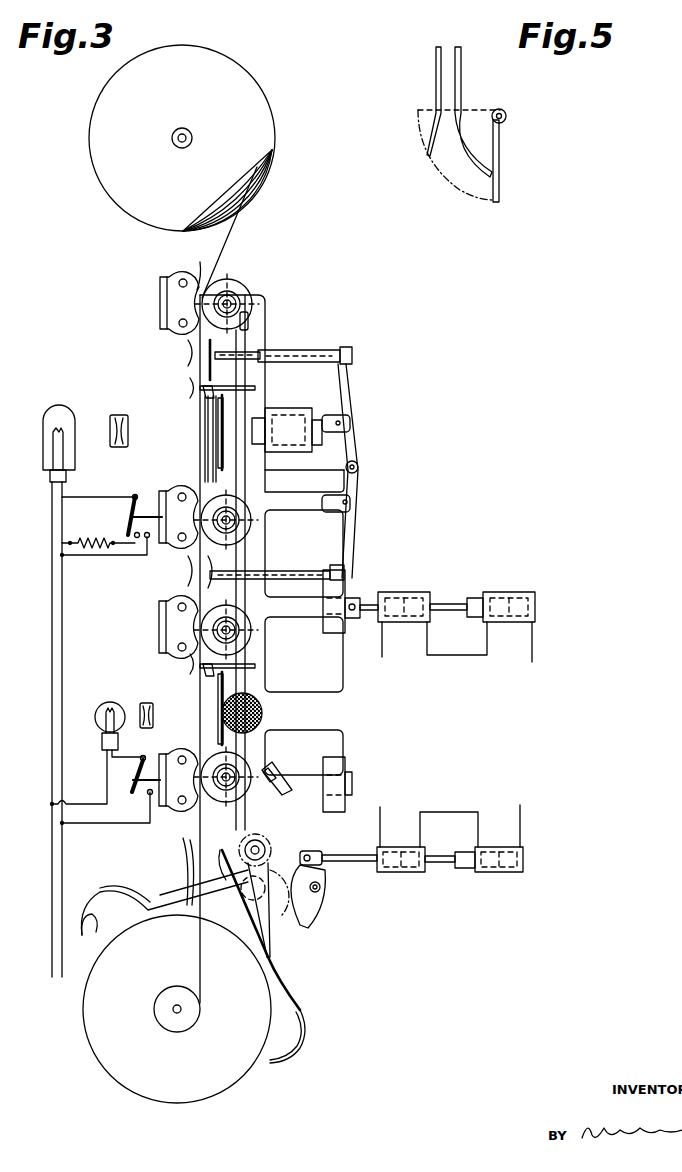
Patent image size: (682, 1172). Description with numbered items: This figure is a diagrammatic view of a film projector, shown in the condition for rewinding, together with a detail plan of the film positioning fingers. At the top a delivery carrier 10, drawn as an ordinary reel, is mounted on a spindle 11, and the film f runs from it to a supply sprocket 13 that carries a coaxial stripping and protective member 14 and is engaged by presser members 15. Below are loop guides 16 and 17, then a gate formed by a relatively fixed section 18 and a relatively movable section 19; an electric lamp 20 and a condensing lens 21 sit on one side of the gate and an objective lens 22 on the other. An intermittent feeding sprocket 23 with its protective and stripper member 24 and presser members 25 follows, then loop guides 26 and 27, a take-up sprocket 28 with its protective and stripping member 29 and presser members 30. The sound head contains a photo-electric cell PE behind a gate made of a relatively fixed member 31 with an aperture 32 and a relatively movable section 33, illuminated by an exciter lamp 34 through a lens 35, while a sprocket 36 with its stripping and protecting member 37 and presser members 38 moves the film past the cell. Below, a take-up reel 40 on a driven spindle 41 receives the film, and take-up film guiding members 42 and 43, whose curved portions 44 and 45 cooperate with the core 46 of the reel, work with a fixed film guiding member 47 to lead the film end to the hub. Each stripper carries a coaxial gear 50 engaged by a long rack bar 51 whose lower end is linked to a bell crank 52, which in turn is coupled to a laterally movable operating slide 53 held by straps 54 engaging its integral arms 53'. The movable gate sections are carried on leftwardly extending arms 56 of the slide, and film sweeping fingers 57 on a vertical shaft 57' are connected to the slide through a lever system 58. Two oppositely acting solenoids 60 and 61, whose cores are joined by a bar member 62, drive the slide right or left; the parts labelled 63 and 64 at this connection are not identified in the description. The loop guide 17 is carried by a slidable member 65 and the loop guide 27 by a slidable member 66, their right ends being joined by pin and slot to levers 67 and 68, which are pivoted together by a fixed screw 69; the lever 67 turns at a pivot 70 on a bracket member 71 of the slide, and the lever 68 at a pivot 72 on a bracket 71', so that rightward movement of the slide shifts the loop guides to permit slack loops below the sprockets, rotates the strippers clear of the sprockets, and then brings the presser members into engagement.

In FIG. 3, the delivery carrier 10 is at (256, 108).
In FIG. 3, the spindle 11 is at (172, 142).
In FIG. 3, the film/tape f is at (242, 218).
In FIG. 3, the supply sprocket 13 is at (242, 286).
In FIG. 3, the stripping and protective member 14 is at (250, 332).
In FIG. 3, the presser members 15 is at (176, 282).
In FIG. 3, the loop guide 16 is at (186, 356).
In FIG. 3, the loop guide 17 is at (214, 346).
In FIG. 3, the relatively fixed gate section 18 is at (212, 448).
In FIG. 5, the relatively fixed gate section 18 is at (466, 84).
In FIG. 3, the relatively movable gate section 19 is at (207, 418).
In FIG. 5, the relatively movable gate section 19 is at (437, 84).
In FIG. 3, the electric lamp 20 is at (50, 470).
In FIG. 3, the condensing lens 21 is at (110, 424).
In FIG. 3, the objective lens 22 is at (280, 452).
In FIG. 3, the intermittent feeding sprocket 23 is at (250, 520).
In FIG. 3, the protective and stripper member 24 is at (247, 532).
In FIG. 3, the presser members 25 is at (188, 490).
In FIG. 3, the loop guide 26 is at (186, 578).
In FIG. 3, the loop guide 27 is at (220, 592).
In FIG. 3, the take-up sprocket 28 is at (251, 650).
In FIG. 3, the protective and stripping member 29 is at (242, 656).
In FIG. 3, the presser members 30 is at (176, 615).
In FIG. 3, the relatively fixed gate member 31 is at (242, 672).
In FIG. 3, the aperture 32 is at (242, 762).
In FIG. 3, the relatively movable gate section 33 is at (210, 695).
In FIG. 3, the exciter lamp 34 is at (104, 752).
In FIG. 3, the lens 35 is at (140, 712).
In FIG. 3, the sprocket 36 is at (282, 776).
In FIG. 3, the stripping and protecting member 37 is at (240, 818).
In FIG. 3, the presser members 38 is at (186, 804).
In FIG. 3, the take-up reel 40 is at (237, 1073).
In FIG. 3, the driven spindle 41 is at (173, 1012).
In FIG. 3, the take-up film guiding member 42 is at (290, 978).
In FIG. 3, the take-up film guiding member 43 is at (112, 890).
In FIG. 3, the curved portion 44 is at (310, 1032).
In FIG. 3, the curved portion 45 is at (83, 937).
In FIG. 3, the core 46 is at (175, 1032).
In FIG. 3, the fixed film guiding member 47 is at (182, 850).
In FIG. 3, the coaxial gear 50 is at (230, 298).
In FIG. 3, the rack bar 51 is at (248, 384).
In FIG. 3, the bell crank 52 is at (322, 764).
In FIG. 3, the operating slide 53 is at (293, 509).
In FIG. 3, the integral arm 53' is at (305, 806).
In FIG. 3, the straps 54 is at (380, 768).
In FIG. 3, the leftwardly extending arm 56 is at (218, 450).
In FIG. 3, the film sweeping fingers 57 is at (238, 560).
In FIG. 5, the film sweeping fingers 57 is at (517, 161).
In FIG. 3, the vertical shaft 57' is at (188, 570).
In FIG. 5, the vertical shaft 57' is at (520, 115).
In FIG. 3, the lever system 58 is at (188, 388).
In FIG. 3, the solenoid 60 is at (510, 590).
In FIG. 3, the solenoid 61 is at (410, 590).
In FIG. 3, the bar member 62 is at (448, 602).
In FIG. 3, the coupling 63 is at (350, 620).
In FIG. 3, the lead 64 is at (370, 632).
In FIG. 3, the slidable member 65 is at (303, 352).
In FIG. 3, the slidable member 66 is at (300, 570).
In FIG. 3, the lever 67 is at (351, 392).
In FIG. 3, the lever 68 is at (350, 565).
In FIG. 3, the fixed screw 69 is at (357, 462).
In FIG. 3, the pivot 70 is at (346, 426).
In FIG. 3, the bracket member 71 is at (353, 411).
In FIG. 3, the bracket 71' is at (355, 512).
In FIG. 3, the pivot 72 is at (350, 504).
In FIG. 3, the photo-electric cell PE is at (258, 710).